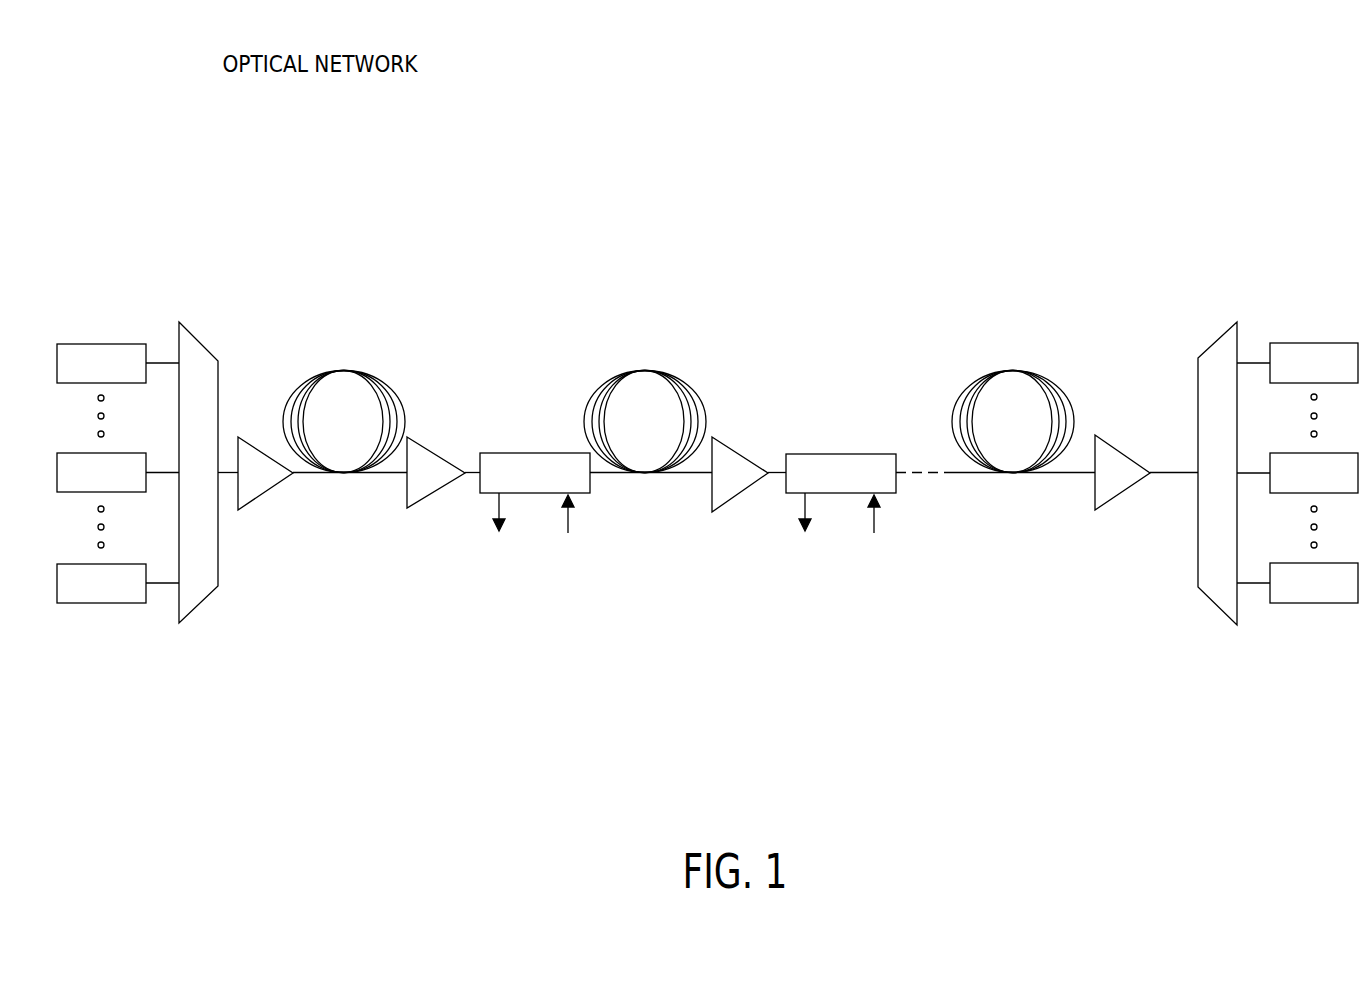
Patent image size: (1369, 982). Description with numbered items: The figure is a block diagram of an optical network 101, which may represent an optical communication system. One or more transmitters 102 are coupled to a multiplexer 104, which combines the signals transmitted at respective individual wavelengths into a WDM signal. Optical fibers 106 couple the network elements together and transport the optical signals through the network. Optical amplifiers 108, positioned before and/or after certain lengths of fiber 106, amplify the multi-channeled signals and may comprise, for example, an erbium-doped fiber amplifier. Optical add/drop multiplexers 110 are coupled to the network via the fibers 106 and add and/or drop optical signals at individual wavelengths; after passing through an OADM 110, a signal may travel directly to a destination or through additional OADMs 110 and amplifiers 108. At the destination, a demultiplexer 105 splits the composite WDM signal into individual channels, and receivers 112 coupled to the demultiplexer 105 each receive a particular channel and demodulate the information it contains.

The optical network 101 is at (149, 80).
The transmitters 102 is at (84, 344).
The multiplexer 104 is at (196, 333).
The demultiplexer 105 is at (1218, 331).
The optical fibers 106 is at (333, 370).
The optical amplifiers 108 is at (262, 497).
The optical add/drop multiplexers 110 is at (519, 453).
The receivers 112 is at (1330, 342).